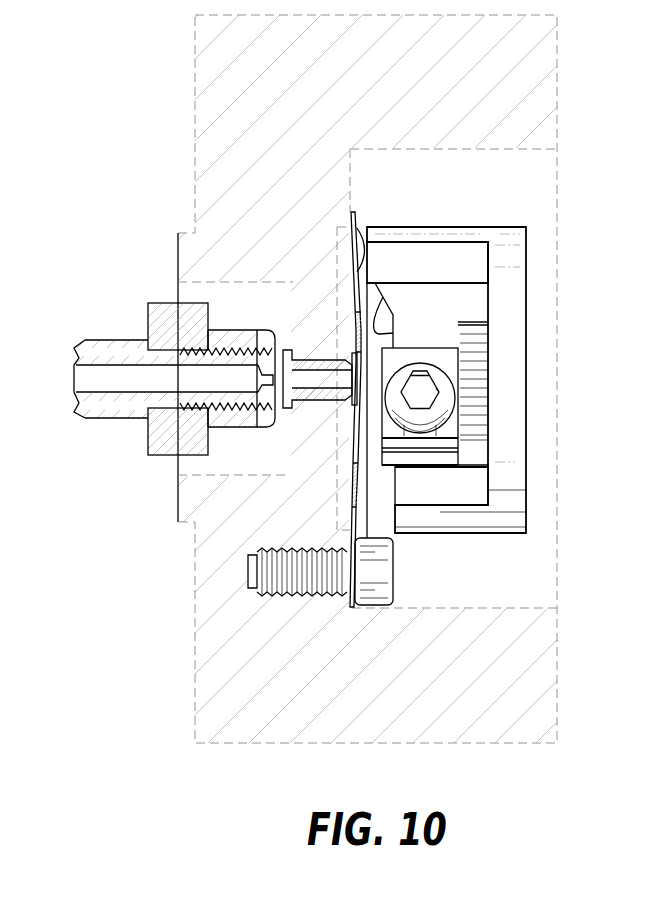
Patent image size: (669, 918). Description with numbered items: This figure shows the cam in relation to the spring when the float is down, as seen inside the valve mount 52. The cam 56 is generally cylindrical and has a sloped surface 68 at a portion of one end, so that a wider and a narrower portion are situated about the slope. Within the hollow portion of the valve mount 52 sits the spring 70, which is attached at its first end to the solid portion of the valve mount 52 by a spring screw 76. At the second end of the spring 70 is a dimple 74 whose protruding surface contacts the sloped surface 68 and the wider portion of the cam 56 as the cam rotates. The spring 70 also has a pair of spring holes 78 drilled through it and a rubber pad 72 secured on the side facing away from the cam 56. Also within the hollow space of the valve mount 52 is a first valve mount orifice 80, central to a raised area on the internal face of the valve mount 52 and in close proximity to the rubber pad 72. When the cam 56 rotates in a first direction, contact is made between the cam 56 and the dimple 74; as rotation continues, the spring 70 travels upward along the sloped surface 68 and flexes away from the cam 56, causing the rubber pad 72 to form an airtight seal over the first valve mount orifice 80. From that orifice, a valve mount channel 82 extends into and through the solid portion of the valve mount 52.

The valve mount 52 is at (262, 745).
The cam 56 is at (527, 407).
The sloped surface 68 is at (393, 333).
The spring 70 is at (348, 518).
The rubber pad 72 is at (353, 360).
The dimple 74 is at (357, 248).
The spring screw 76 is at (393, 570).
The spring holes 78 is at (358, 337).
The first valve mount orifice 80 is at (323, 362).
The valve mount channel 82 is at (320, 380).